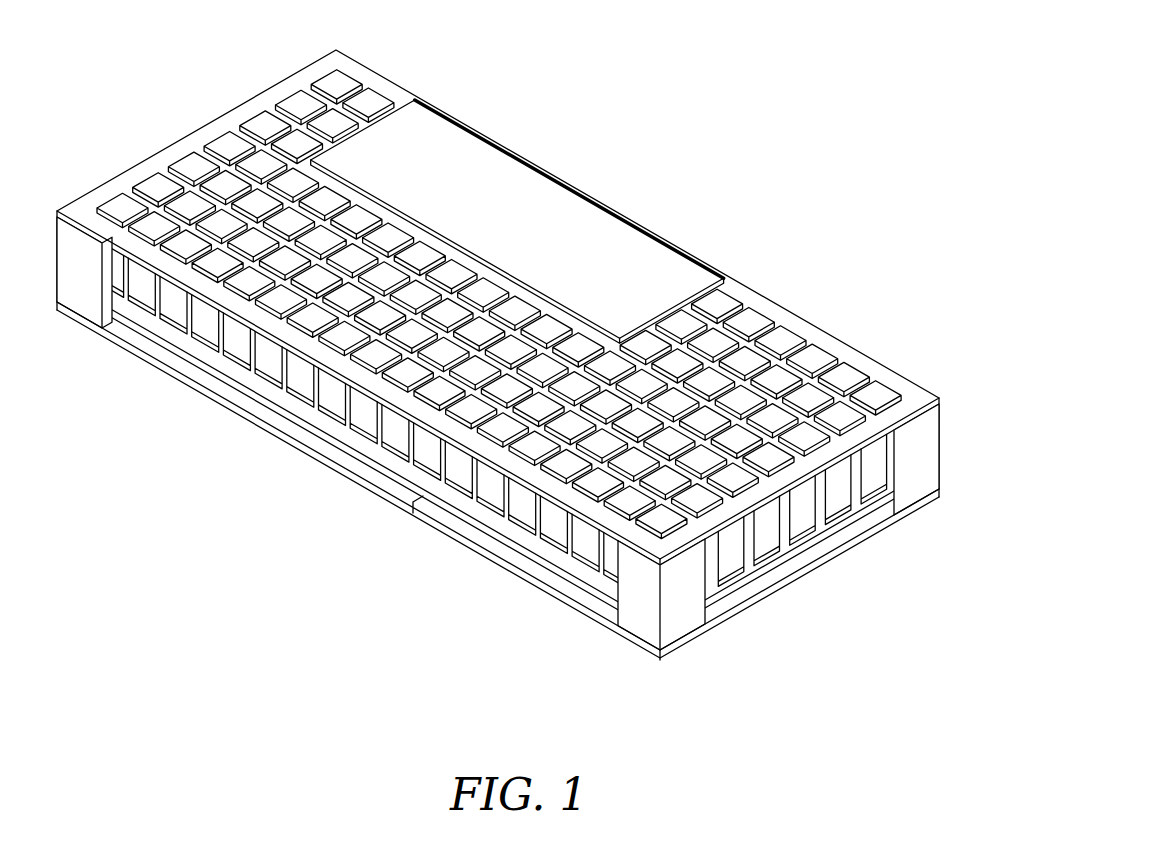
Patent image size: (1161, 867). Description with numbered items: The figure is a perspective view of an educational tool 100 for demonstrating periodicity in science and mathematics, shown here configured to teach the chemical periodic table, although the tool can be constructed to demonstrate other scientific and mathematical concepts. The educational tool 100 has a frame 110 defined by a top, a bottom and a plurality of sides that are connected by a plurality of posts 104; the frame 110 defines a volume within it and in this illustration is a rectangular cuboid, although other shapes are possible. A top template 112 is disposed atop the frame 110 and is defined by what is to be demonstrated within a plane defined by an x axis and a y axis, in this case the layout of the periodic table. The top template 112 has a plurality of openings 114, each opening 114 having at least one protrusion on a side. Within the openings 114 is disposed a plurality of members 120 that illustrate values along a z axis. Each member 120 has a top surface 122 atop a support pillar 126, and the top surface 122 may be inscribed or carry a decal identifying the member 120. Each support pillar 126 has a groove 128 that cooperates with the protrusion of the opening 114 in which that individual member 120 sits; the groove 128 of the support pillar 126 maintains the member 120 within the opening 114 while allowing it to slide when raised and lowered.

The educational tool 100 is at (520, 338).
The posts 104 is at (80, 270).
The frame 110 is at (931, 438).
The top template 112 is at (815, 352).
The openings 114 is at (713, 518).
The members 120 is at (300, 374).
The top surface 122 is at (877, 393).
The support pillar 126 is at (588, 548).
The groove 128 is at (857, 492).